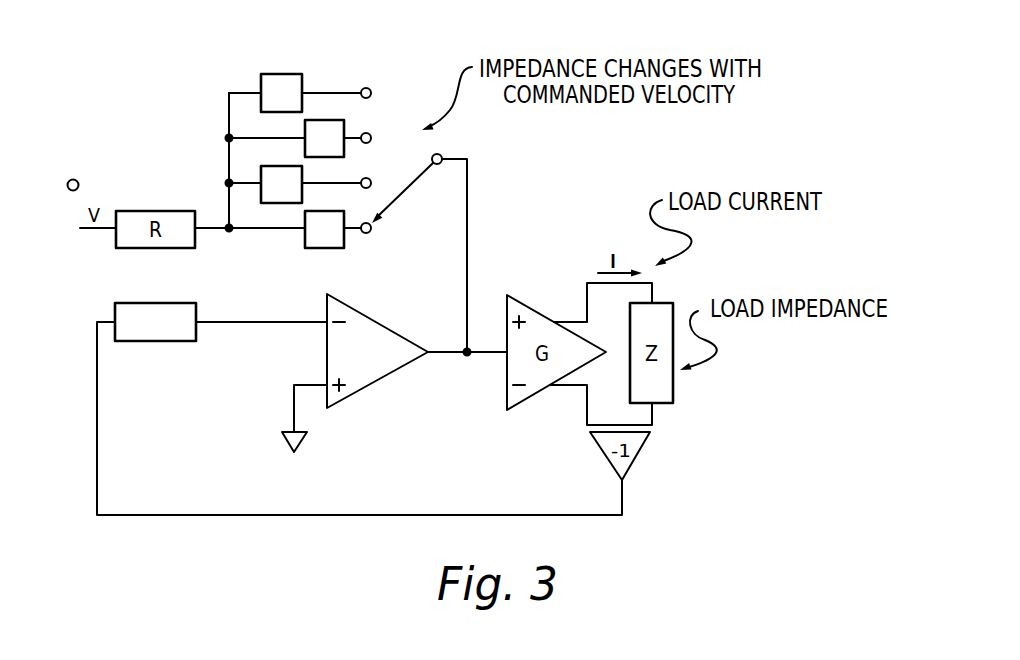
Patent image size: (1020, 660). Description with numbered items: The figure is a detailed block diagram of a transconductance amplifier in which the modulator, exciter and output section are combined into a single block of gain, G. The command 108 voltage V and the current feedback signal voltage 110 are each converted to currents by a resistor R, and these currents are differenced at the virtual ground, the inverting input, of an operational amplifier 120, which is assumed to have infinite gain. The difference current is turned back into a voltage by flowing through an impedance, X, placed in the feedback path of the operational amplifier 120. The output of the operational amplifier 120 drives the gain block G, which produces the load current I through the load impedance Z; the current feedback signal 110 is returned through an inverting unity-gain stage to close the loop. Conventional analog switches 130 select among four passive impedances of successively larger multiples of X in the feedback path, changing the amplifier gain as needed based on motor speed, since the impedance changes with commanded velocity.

The command 108 is at (73, 172).
The analog switches 130 is at (348, 60).
The feedback signal voltage 110 is at (108, 454).
The operational amplifier 120 is at (381, 396).